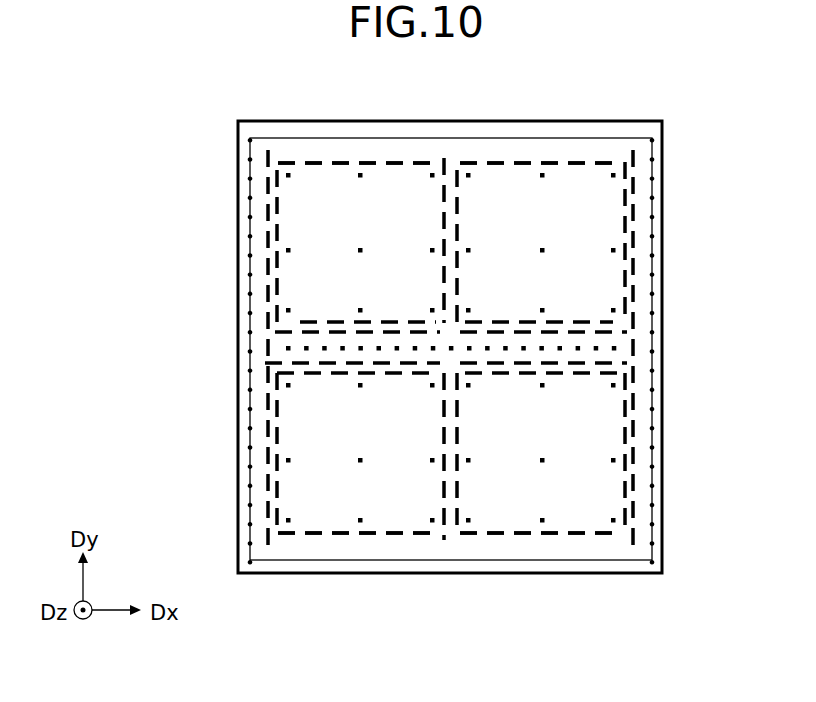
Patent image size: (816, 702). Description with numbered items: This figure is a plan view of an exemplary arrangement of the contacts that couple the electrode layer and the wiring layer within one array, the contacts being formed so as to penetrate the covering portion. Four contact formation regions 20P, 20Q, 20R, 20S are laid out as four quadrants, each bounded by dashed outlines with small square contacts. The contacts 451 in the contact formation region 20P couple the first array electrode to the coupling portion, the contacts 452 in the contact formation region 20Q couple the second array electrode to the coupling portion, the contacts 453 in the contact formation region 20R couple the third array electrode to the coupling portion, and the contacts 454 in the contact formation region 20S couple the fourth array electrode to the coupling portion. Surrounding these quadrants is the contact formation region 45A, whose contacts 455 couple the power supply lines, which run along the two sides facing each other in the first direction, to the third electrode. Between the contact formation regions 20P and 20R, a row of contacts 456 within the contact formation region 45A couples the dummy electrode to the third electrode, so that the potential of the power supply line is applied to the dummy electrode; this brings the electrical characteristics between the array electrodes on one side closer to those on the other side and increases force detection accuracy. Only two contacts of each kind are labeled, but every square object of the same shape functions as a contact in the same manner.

The contact formation region 45A is at (268, 137).
The contacts 455 is at (250, 163).
The contacts 456 is at (290, 348).
The contacts 451 is at (360, 177).
The contacts 452 is at (542, 177).
The contacts 453 is at (360, 387).
The contacts 454 is at (542, 387).
The contact formation region 20P is at (345, 160).
The contact formation region 20Q is at (527, 160).
The contact formation region 20R is at (330, 536).
The contact formation region 20S is at (527, 536).